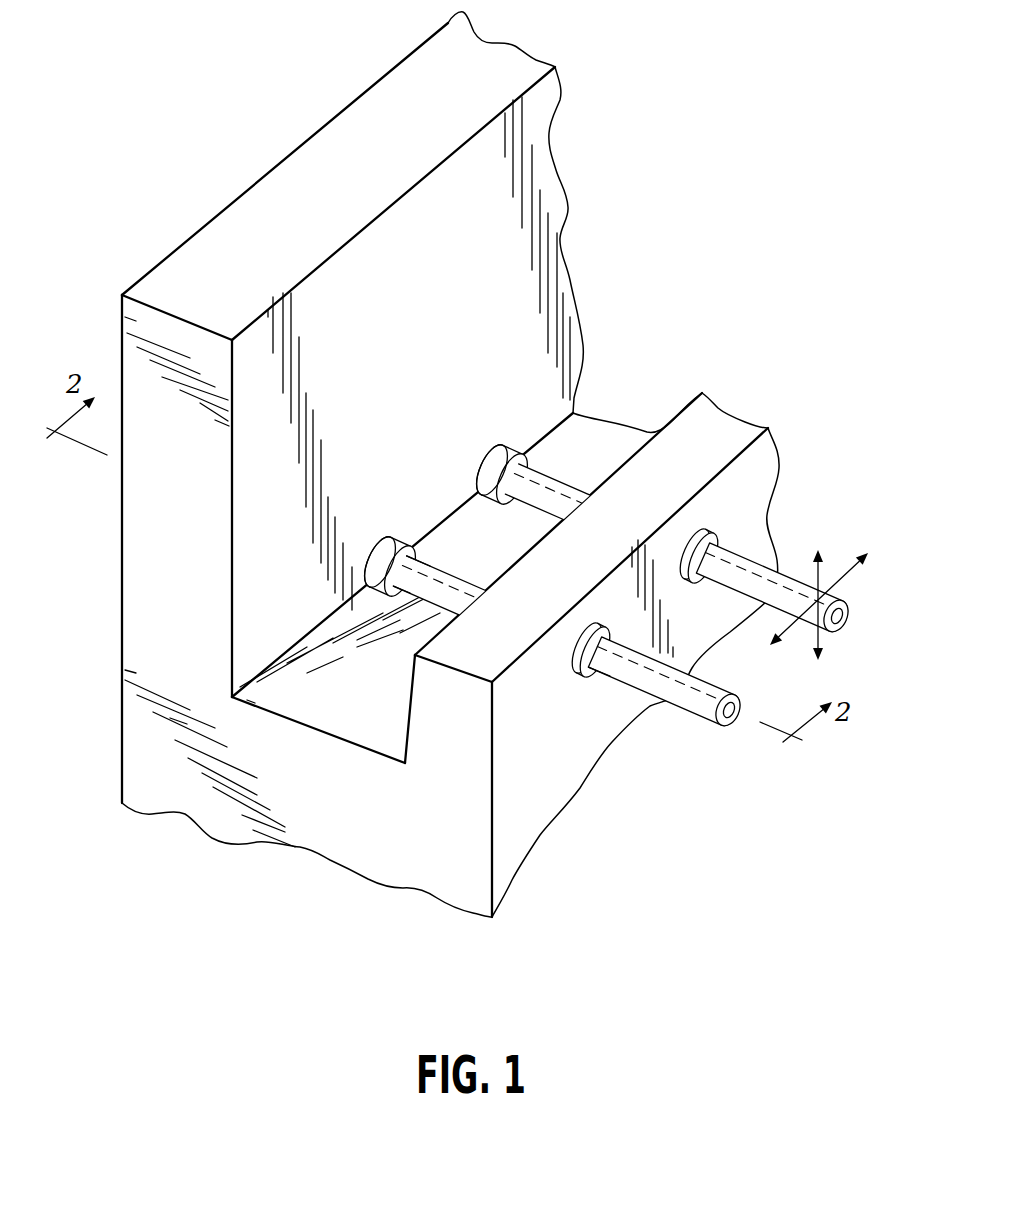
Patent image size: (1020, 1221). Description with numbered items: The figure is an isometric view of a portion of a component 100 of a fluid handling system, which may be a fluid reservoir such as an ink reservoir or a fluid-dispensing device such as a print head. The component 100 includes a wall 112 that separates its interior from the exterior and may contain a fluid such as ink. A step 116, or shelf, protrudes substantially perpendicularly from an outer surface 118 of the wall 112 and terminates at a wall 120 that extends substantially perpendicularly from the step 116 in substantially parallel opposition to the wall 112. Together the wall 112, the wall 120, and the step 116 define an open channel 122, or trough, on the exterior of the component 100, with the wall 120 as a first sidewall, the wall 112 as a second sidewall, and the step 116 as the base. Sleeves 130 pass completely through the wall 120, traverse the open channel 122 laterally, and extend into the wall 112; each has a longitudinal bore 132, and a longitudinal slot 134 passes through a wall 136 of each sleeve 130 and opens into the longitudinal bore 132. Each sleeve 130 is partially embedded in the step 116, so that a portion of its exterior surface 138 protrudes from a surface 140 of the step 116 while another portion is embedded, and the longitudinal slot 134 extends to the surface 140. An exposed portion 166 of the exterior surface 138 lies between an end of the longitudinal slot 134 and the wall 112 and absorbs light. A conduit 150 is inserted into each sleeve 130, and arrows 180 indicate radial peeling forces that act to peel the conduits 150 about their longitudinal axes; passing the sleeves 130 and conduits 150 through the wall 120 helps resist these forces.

The component 100 is at (520, 499).
The wall 112 is at (507, 55).
The step 116 is at (342, 740).
The outer surface 118 is at (550, 198).
The wall 120 is at (708, 428).
The open channel 122 is at (417, 697).
The sleeve 130 is at (498, 446).
The longitudinal bore 132 is at (607, 678).
The longitudinal slot 134 is at (438, 557).
The wall of sleeve 136 is at (393, 587).
The exterior surface 138 is at (488, 463).
The surface of step 140 is at (620, 440).
The conduit 150 is at (547, 487).
The exposed portion 166 is at (377, 543).
The arrows 180 is at (852, 582).